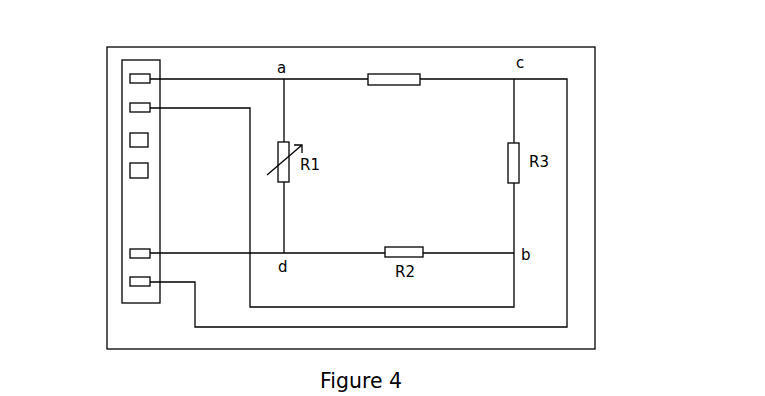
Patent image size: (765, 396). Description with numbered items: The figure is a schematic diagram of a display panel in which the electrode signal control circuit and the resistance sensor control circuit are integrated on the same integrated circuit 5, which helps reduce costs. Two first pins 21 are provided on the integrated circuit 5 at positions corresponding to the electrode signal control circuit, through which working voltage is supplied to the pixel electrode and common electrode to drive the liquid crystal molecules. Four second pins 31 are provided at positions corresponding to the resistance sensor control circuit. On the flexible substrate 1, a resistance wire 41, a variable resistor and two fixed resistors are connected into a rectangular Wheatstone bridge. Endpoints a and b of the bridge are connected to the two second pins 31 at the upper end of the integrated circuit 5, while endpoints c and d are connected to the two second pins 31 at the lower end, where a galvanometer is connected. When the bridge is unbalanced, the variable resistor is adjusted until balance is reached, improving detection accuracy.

The flexible substrate 1 is at (595, 262).
The integrated circuit 5 is at (132, 203).
The second pin 31 is at (130, 105).
The first pin 21 is at (128, 137).
The resistance wire 41 is at (388, 74).